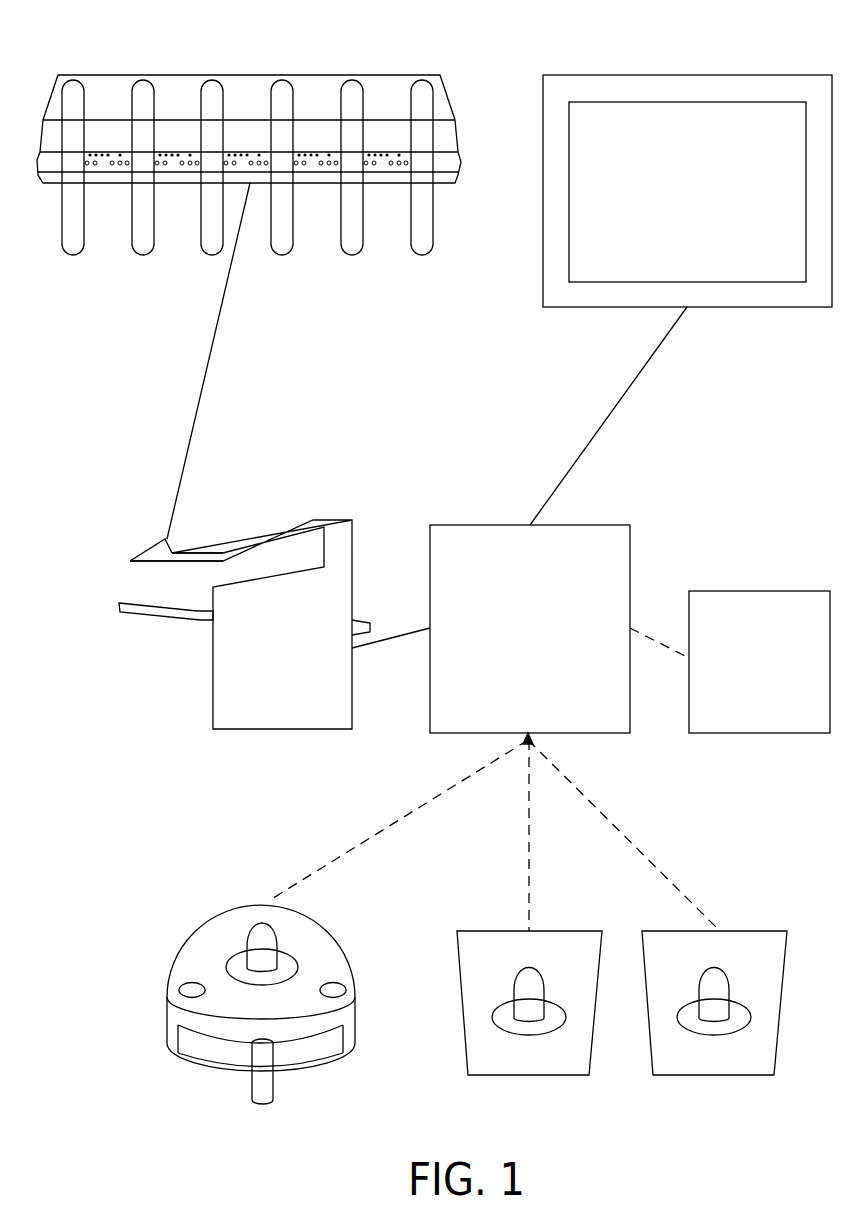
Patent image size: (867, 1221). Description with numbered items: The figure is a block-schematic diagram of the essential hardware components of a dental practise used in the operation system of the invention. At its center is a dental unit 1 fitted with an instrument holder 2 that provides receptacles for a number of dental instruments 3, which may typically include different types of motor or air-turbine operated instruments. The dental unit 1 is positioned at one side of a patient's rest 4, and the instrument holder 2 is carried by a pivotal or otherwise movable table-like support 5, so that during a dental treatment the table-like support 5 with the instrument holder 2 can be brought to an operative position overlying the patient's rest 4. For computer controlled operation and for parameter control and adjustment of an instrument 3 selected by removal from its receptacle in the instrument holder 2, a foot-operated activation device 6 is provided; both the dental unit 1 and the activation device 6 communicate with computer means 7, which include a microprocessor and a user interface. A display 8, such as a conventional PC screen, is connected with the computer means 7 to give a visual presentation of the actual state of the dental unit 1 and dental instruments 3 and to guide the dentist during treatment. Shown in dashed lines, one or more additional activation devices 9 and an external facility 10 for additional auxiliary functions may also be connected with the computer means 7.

The dental unit 1 is at (244, 635).
The instrument holder 2 is at (249, 288).
The dental instruments 3 is at (352, 255).
The patient's rest 4 is at (147, 617).
The table-like support 5 is at (173, 547).
The foot-operated activation device 6 is at (322, 1068).
The computer means 7 is at (475, 525).
The display 8 is at (758, 308).
The additional activation devices 9 is at (493, 930).
The external facility 10 is at (780, 733).